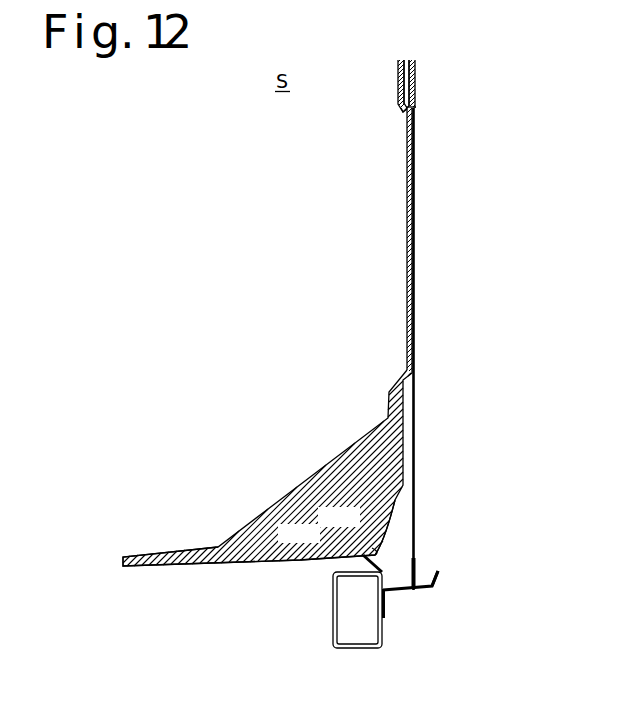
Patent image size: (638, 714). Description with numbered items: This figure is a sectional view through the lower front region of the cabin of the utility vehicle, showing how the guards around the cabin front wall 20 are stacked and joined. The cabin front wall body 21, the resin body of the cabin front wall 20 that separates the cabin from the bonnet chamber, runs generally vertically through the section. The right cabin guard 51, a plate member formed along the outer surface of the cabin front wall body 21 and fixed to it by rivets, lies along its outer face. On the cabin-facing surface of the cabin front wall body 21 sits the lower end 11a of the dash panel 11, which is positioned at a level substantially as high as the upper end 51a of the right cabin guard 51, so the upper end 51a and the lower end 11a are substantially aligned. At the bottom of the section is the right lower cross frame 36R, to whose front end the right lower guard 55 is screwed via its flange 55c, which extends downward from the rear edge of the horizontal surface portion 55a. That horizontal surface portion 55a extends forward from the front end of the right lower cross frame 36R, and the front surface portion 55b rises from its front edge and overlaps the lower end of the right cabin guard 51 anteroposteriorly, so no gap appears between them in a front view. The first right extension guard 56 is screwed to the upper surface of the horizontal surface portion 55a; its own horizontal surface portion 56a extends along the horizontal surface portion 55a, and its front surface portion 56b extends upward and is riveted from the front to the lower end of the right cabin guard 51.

The dash panel 11 is at (398, 72).
The lower end of the dash panel 11a is at (399, 110).
The cabin front wall body 21 is at (317, 294).
The cabin front wall 20 is at (413, 68).
The right cabin guard 51 is at (413, 256).
The upper end of the right cabin guard 51a is at (414, 107).
The first right extension guard 56 is at (309, 478).
The horizontal surface portion 56a is at (370, 540).
The front surface portion 56b is at (402, 584).
The right lower guard 55 is at (442, 614).
The horizontal surface portion 55a is at (405, 591).
The front surface portion 55b is at (438, 573).
The flange 55c is at (386, 606).
The right lower cross frame 36R is at (333, 617).